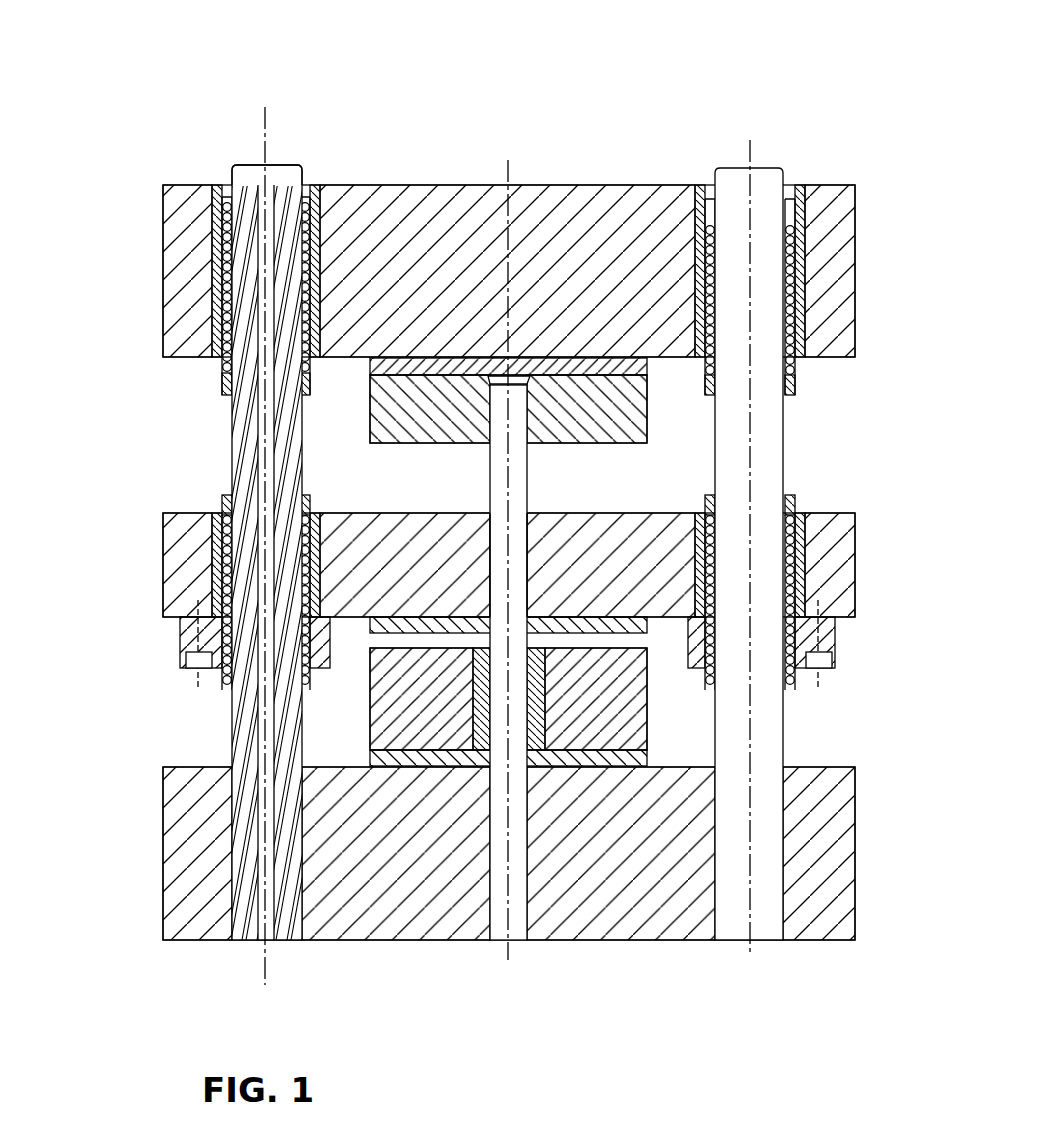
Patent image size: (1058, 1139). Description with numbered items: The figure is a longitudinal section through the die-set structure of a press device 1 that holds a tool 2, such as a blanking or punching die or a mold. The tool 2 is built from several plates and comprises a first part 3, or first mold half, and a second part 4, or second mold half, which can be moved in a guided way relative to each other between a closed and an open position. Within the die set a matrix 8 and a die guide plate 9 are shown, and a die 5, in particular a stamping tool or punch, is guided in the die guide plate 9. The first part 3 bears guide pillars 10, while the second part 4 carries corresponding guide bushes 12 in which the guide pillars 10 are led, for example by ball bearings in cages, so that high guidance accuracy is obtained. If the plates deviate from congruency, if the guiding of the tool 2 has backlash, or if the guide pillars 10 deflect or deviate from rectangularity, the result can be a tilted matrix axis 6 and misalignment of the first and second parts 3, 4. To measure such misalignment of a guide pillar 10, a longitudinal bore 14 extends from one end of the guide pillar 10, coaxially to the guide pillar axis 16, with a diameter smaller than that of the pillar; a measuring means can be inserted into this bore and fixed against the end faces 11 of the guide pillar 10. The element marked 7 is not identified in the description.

The press device 1 is at (884, 124).
The tool 2 is at (122, 620).
The first part 3 is at (860, 762).
The second part 4 is at (652, 416).
The die 5 is at (527, 496).
The matrix axis 6 is at (487, 508).
The top plate 7 is at (510, 163).
The matrix 8 is at (545, 645).
The die guide plate 9 is at (845, 541).
The guide pillar 10 is at (770, 168).
The end faces 11 is at (269, 490).
The guide bush 12 is at (800, 380).
The longitudinal bore 14 is at (256, 158).
The guide pillar axis 16 is at (266, 118).